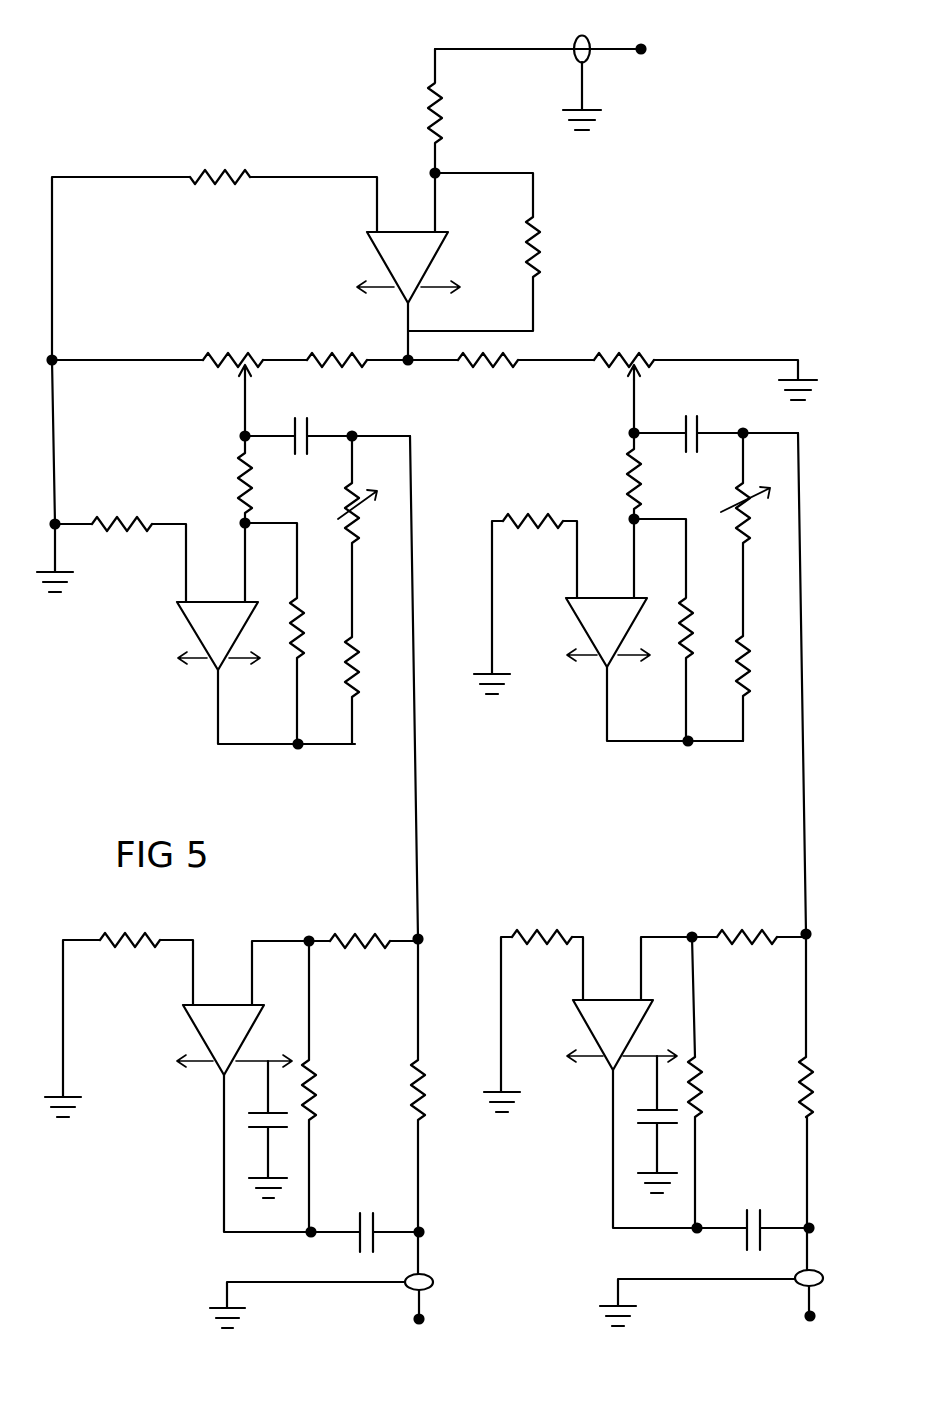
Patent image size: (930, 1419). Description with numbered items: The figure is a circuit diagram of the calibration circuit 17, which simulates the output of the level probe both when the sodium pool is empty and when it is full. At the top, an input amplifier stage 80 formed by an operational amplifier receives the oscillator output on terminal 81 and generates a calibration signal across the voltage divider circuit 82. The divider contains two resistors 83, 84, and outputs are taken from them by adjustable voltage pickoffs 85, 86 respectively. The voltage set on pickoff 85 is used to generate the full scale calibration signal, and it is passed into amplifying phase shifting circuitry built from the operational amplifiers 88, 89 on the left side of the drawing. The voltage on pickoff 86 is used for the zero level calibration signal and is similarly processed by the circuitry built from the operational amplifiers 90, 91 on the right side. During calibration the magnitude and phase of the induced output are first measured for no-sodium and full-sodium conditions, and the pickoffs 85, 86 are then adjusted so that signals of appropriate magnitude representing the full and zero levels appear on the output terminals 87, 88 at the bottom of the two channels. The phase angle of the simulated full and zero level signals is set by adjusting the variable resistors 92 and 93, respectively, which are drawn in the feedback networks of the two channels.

The calibration circuit 17 is at (551, 470).
The input amplifier stage 80 is at (396, 273).
The terminal 81 is at (644, 52).
The voltage divider circuit 82 is at (340, 204).
The resistor 83 is at (246, 357).
The resistor 84 is at (624, 357).
The adjustable voltage pickoff 85 is at (244, 404).
The adjustable voltage pickoff 86 is at (633, 402).
The output terminal 87 is at (417, 1321).
The output terminal / operational amplifier 88 is at (206, 643).
The operational amplifier 89 is at (212, 1048).
The operational amplifier 90 is at (595, 639).
The operational amplifier 91 is at (601, 1043).
The variable resistor 92 is at (352, 533).
The variable resistor 93 is at (744, 533).